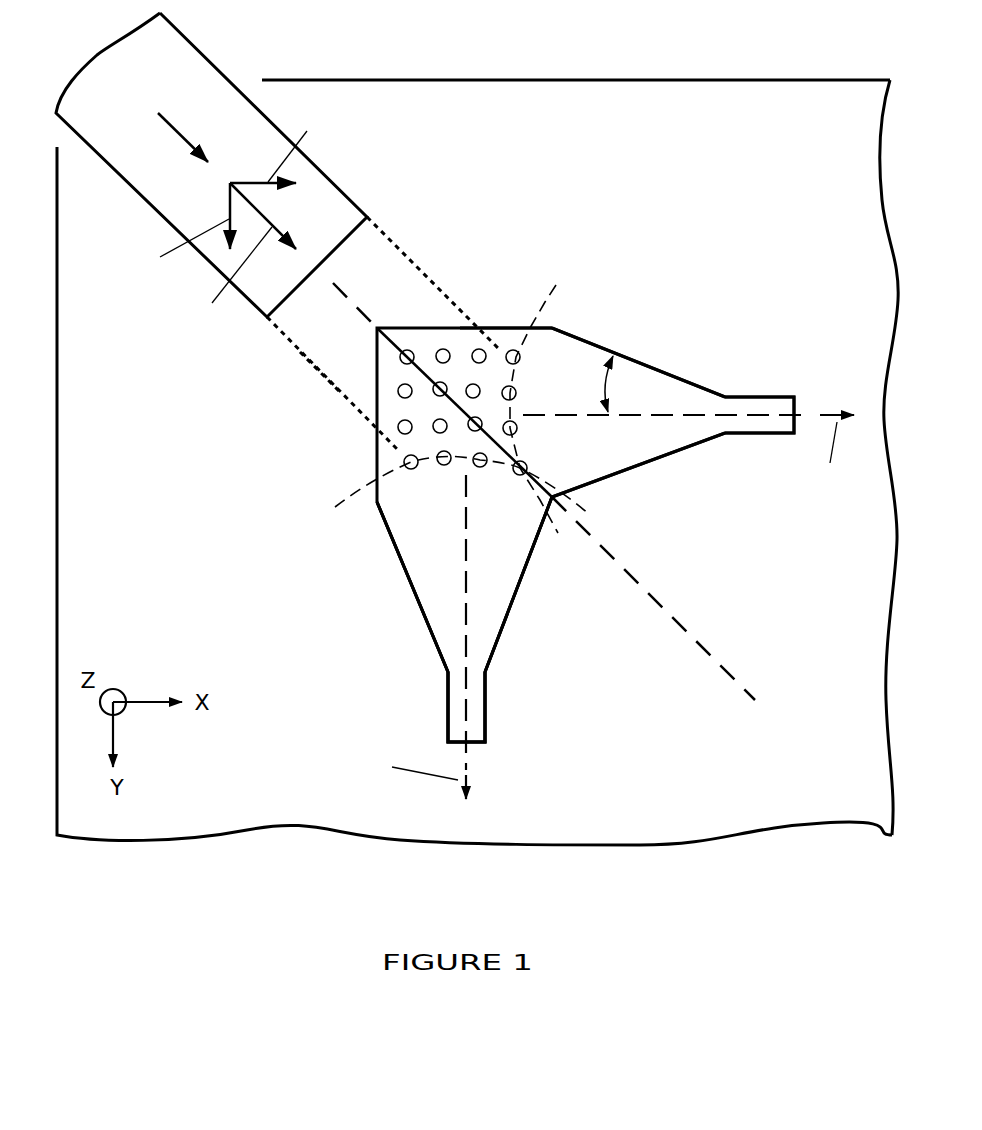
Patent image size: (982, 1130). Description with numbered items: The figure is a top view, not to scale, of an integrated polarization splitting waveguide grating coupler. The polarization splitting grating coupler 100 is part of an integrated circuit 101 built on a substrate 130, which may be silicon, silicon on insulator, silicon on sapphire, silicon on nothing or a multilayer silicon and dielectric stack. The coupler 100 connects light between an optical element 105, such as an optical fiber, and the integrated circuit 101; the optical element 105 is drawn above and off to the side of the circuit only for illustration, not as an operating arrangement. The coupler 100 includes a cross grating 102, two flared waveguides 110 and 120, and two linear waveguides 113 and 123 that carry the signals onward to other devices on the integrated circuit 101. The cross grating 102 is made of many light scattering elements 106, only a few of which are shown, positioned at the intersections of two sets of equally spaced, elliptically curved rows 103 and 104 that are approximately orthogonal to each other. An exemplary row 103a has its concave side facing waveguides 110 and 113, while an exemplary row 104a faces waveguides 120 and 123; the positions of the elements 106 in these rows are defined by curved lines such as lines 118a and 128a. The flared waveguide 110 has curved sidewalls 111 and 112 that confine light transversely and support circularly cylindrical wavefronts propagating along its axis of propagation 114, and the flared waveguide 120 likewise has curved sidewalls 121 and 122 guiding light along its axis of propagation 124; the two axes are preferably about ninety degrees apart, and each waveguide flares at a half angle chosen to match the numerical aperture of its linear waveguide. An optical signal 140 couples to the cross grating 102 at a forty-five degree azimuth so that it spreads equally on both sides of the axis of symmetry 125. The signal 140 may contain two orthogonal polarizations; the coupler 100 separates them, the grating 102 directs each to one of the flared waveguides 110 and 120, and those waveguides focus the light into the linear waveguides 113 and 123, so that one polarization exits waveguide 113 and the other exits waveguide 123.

The polarization splitting grating coupler 100 is at (614, 631).
The integrated circuit 101 is at (698, 764).
The cross grating 102 is at (297, 388).
The rows 103 is at (456, 276).
The curved row 103a is at (508, 319).
The rows 104 is at (296, 437).
The curved row 104a is at (366, 465).
The optical element 105 is at (137, 168).
The light scattering elements 106 is at (324, 405).
The flared waveguide 110 is at (613, 337).
The curved sidewall 111 is at (658, 370).
The curved sidewall 112 is at (628, 472).
The linear waveguide 113 is at (760, 387).
The axis of propagation 114 is at (673, 415).
The curved line 118a is at (556, 285).
The flared waveguide 120 is at (386, 562).
The curved sidewall 121 is at (412, 588).
The curved sidewall 122 is at (512, 605).
The linear waveguide 123 is at (421, 698).
The axis of propagation 124 is at (467, 637).
The axis of symmetry 125 is at (655, 603).
The curved line 128a is at (335, 507).
The substrate 130 is at (811, 795).
The optical signal 140 is at (178, 133).